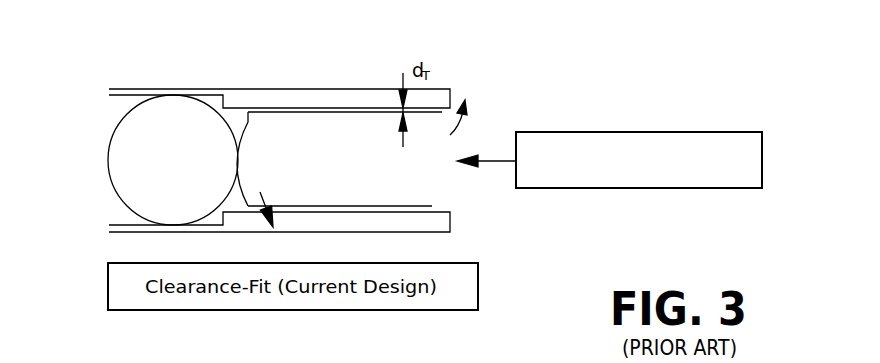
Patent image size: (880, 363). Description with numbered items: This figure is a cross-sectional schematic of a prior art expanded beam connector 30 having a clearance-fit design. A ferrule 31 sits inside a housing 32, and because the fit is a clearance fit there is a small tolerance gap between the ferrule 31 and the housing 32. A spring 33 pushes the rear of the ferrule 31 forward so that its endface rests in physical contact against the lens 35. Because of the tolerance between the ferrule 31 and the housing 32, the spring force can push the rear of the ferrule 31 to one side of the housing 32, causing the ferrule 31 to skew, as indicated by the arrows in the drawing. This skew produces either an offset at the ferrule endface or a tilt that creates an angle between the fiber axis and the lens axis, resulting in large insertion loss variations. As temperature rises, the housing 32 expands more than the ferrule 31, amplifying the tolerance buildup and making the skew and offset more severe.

The connector 30 is at (244, 140).
The ferrule 31 is at (247, 128).
The housing 32 is at (258, 96).
The spring 33 is at (642, 132).
The lens 35 is at (122, 163).